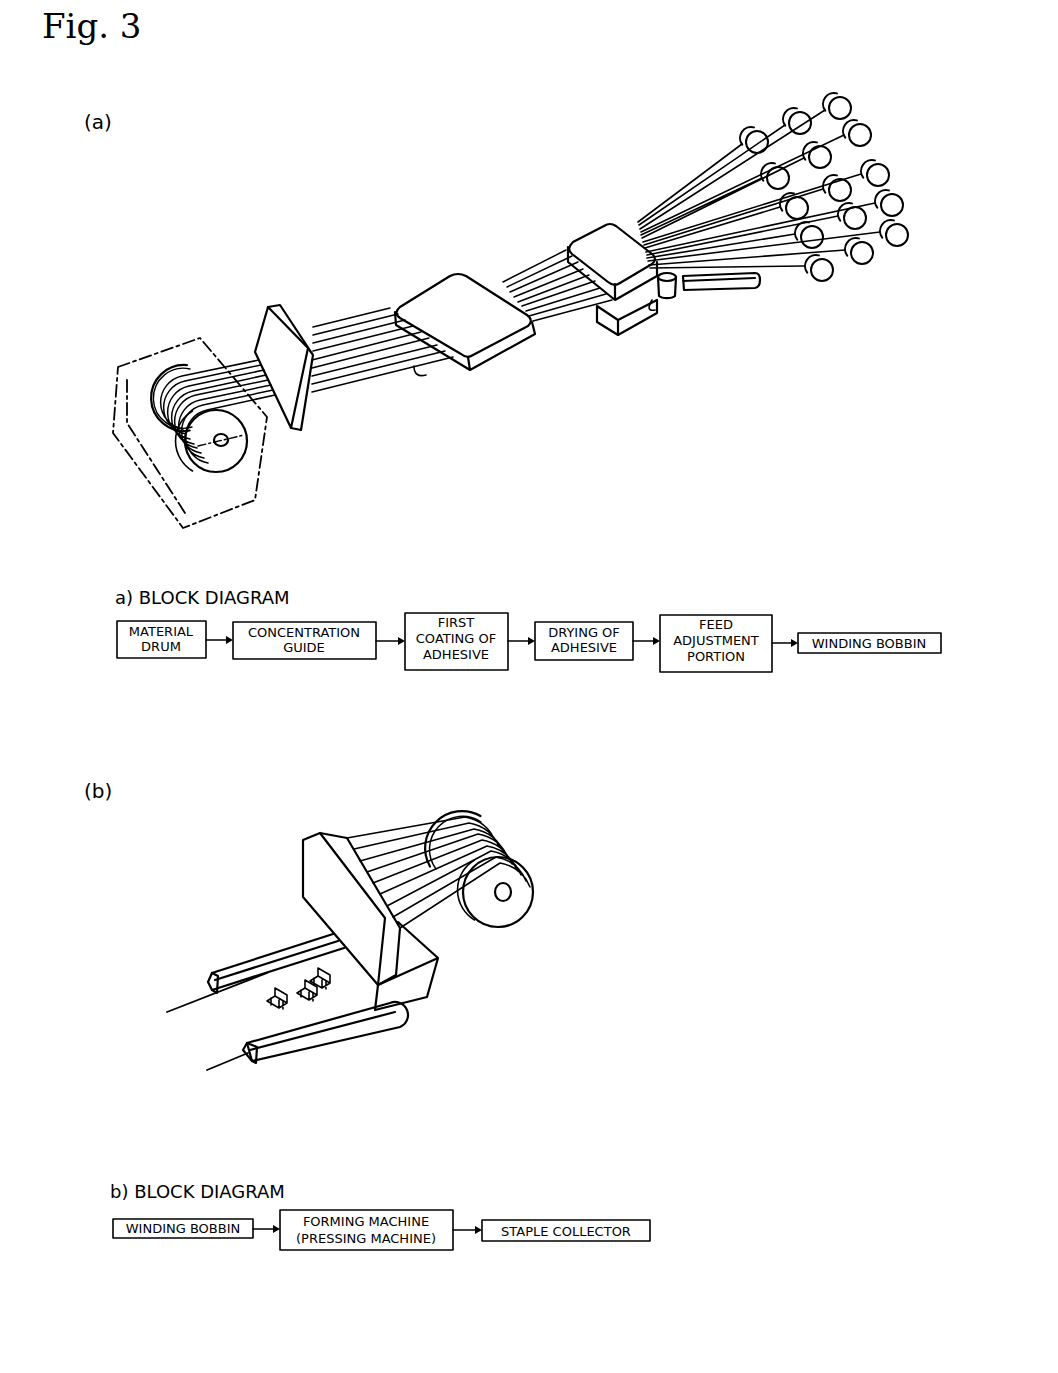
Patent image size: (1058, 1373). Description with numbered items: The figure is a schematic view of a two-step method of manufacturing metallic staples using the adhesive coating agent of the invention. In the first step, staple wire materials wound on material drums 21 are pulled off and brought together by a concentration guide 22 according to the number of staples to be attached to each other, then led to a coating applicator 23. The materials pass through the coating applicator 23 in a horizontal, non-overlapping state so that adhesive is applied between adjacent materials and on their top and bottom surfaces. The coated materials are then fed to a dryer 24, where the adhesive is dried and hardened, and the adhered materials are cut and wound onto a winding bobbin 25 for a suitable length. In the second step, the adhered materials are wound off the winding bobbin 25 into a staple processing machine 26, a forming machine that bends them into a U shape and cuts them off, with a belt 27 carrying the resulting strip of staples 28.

The material drum 21 is at (893, 244).
The concentration guide 22 is at (643, 223).
The coating applicator 23 is at (627, 333).
The dryer 24 is at (412, 293).
The winding bobbin 25 is at (177, 380).
The staple processing machine 26 is at (435, 987).
The belt 27 is at (292, 1045).
The strip of staples 28 is at (263, 1005).